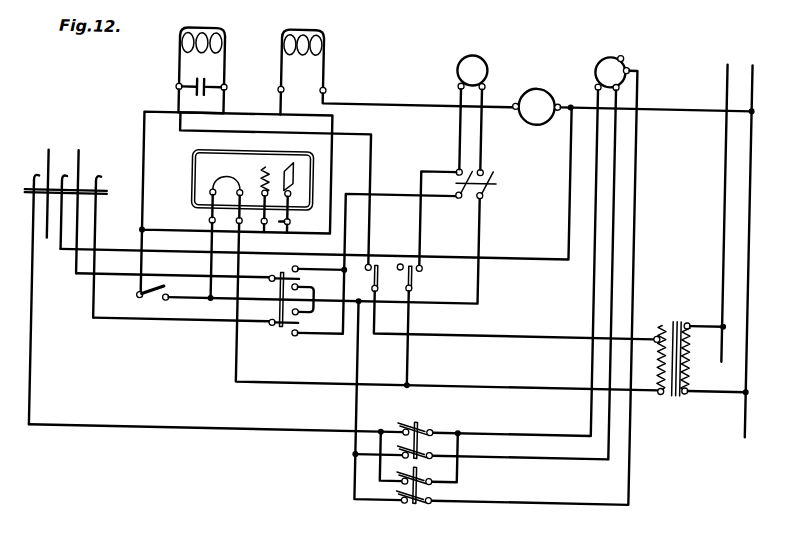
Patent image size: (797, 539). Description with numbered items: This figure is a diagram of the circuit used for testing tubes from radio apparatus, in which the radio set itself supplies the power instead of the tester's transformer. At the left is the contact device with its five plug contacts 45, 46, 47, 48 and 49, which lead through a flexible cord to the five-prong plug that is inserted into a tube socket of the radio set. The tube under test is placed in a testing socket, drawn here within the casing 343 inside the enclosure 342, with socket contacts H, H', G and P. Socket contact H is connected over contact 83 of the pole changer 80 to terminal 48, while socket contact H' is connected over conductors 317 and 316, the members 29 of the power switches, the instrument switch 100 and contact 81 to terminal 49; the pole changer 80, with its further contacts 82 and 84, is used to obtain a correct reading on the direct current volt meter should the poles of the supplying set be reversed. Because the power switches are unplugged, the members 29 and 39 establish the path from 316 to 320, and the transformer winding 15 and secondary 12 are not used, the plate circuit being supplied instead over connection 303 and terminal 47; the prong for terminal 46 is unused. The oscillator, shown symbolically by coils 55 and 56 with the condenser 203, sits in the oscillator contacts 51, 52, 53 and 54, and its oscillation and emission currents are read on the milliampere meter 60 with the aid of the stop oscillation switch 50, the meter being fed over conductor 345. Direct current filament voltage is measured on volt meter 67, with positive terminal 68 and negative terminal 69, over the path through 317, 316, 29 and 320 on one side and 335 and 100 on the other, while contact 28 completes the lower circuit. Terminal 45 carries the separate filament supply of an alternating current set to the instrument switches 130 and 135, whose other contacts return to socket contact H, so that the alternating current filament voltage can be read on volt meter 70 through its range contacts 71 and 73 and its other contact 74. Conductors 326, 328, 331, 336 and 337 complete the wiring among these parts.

The transformer secondary winding 12 is at (691, 378).
The transformer primary winding 15 is at (662, 322).
The relay contact 28 is at (512, 169).
The members of the power switches 29 is at (414, 288).
The members of the power switches 39 is at (423, 268).
The plug contact 45 is at (58, 290).
The plug contact 46 is at (49, 183).
The plug contact 47 is at (62, 202).
The plug contact 48 is at (80, 202).
The plug contact 49 is at (97, 236).
The stop oscillation switch 50 is at (166, 305).
The oscillator contact 51 is at (172, 89).
The oscillator contact 52 is at (223, 89).
The oscillator contact 53 is at (281, 92).
The oscillator contact 54 is at (322, 91).
The coil 55 is at (198, 30).
The coil 56 is at (300, 30).
The milliampere meter 60 is at (538, 87).
The direct current volt meter 67 is at (480, 60).
The positive terminal 68 is at (481, 84).
The negative terminal 69 is at (454, 85).
The alternating current volt meter 70 is at (618, 52).
The contact 71 is at (628, 66).
The contact 73 is at (616, 87).
The contact 74 is at (591, 84).
The pole changer 80 is at (280, 312).
The contact 81 is at (292, 271).
The contact 82 is at (305, 289).
The contact 83 is at (305, 316).
The contact 84 is at (295, 339).
The instrument switch 100 is at (470, 201).
The instrument switch 130 is at (428, 487).
The instrument switch 135 is at (425, 442).
The condenser 203 is at (201, 95).
The connection 303 is at (510, 258).
The conductor 316 is at (411, 357).
The conductor 317 is at (310, 385).
The conductor 320 is at (418, 228).
The conductor 326 is at (224, 136).
The conductor 328 is at (450, 302).
The conductor 331 is at (392, 194).
The conductor 335 is at (139, 430).
The conductor 336 is at (122, 326).
The conductor 337 is at (118, 282).
The casing 342 is at (142, 174).
The instrument casing 343 is at (331, 166).
The conductor 345 is at (406, 107).
The socket contact H is at (199, 244).
The socket contact H' is at (250, 219).
The terminal G is at (265, 226).
The terminal P is at (293, 211).